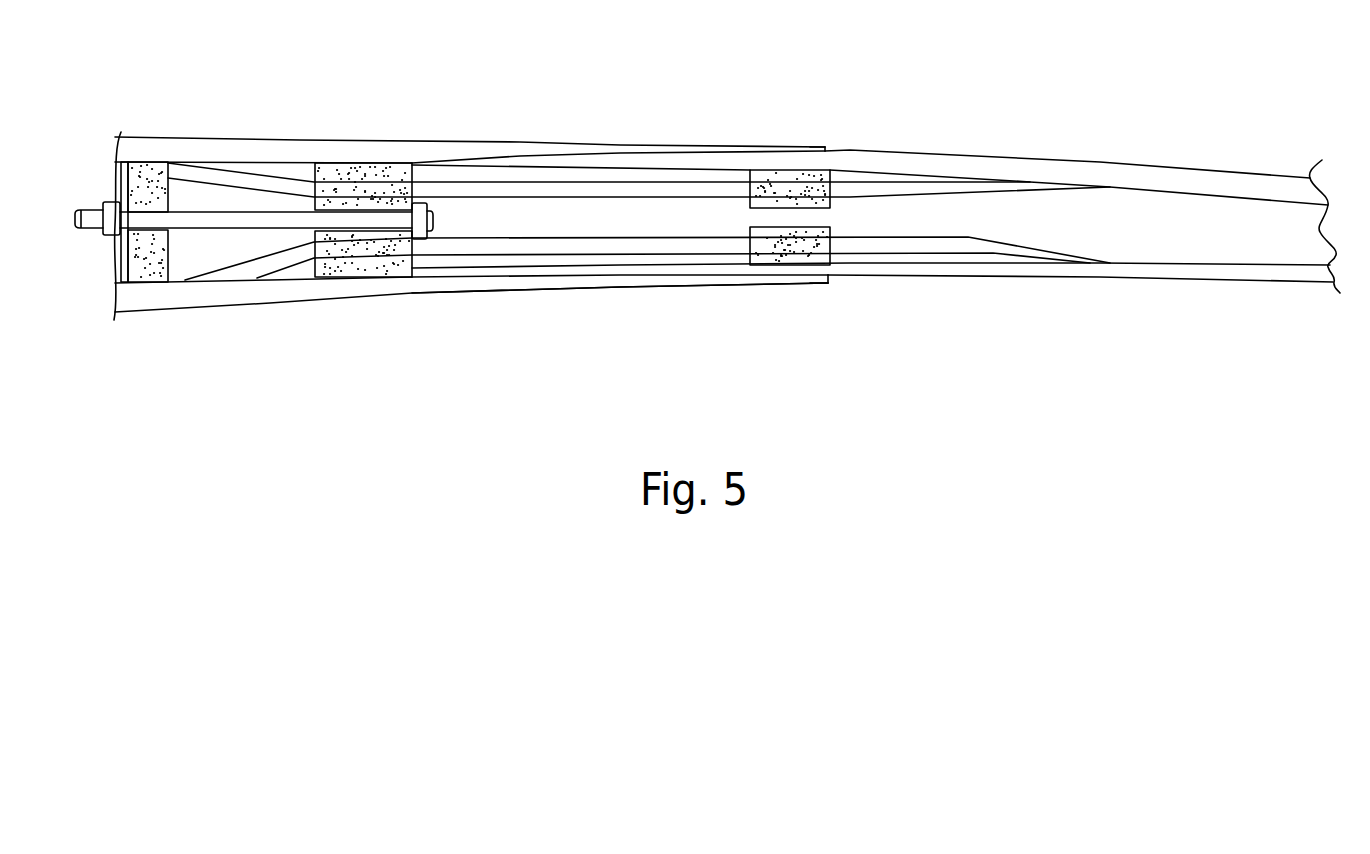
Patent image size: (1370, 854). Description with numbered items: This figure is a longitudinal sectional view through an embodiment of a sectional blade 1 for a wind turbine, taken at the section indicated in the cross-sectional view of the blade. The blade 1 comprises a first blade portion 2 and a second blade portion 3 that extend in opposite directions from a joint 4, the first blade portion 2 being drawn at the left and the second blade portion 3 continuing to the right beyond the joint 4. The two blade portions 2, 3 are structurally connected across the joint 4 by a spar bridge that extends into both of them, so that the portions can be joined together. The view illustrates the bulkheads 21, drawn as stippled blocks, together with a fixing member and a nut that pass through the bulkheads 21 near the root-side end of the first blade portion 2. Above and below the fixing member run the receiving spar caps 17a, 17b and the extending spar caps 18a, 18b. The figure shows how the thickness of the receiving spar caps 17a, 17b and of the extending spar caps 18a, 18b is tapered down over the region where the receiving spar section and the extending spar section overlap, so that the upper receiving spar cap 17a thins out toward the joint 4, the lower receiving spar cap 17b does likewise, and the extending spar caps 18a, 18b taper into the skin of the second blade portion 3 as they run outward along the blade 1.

The sectional blade 1 is at (1230, 117).
The first blade portion 2 is at (162, 150).
The second blade portion 3 is at (1142, 277).
The joint 4 is at (845, 137).
The receiving spar cap 17a is at (483, 150).
The receiving spar cap 17b is at (585, 281).
The extending spar cap 18a is at (680, 160).
The extending spar cap 18b is at (715, 267).
The bulkhead 21 is at (375, 182).